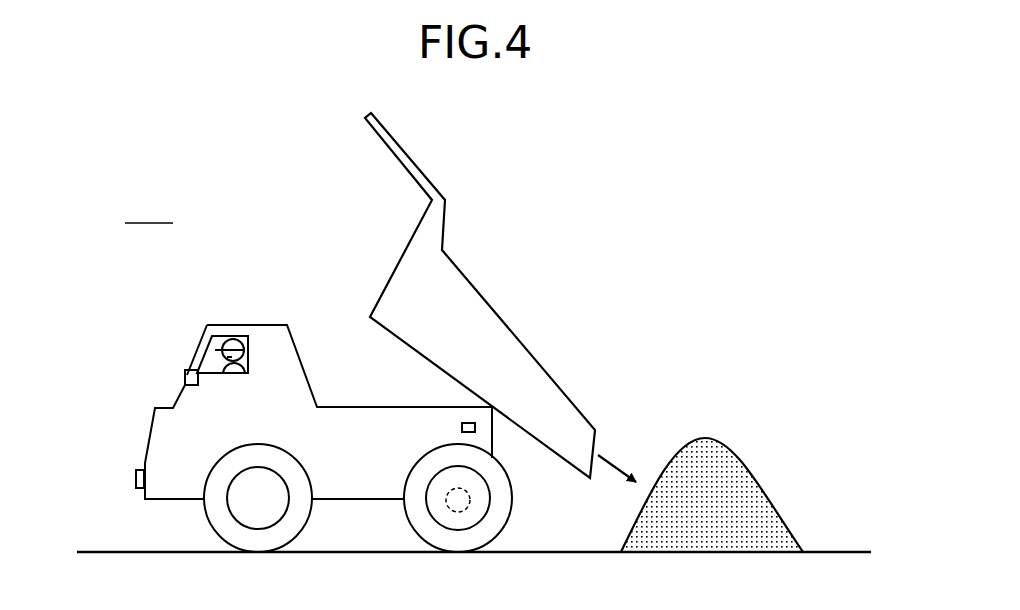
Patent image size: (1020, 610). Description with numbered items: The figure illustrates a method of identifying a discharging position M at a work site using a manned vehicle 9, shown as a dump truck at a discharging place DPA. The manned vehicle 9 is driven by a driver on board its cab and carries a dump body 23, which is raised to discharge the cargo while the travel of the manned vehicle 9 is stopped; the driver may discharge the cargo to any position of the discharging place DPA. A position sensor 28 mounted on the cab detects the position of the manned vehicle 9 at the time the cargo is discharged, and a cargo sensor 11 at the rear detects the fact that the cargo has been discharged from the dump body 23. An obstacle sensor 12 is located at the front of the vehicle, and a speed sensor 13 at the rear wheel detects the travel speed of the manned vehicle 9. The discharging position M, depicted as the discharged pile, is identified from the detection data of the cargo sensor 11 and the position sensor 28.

The manned vehicle 9 is at (147, 336).
The position sensor 28 is at (184, 377).
The obstacle sensor 12 is at (135, 479).
The cargo sensor 11 is at (476, 427).
The speed sensor 13 is at (470, 507).
The dump body 23 is at (495, 309).
The discharging position M is at (794, 496).
The discharging place DPA is at (149, 212).